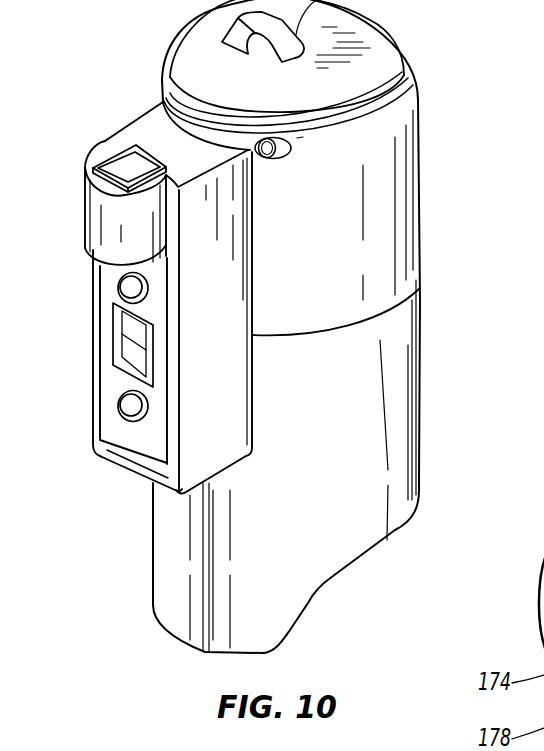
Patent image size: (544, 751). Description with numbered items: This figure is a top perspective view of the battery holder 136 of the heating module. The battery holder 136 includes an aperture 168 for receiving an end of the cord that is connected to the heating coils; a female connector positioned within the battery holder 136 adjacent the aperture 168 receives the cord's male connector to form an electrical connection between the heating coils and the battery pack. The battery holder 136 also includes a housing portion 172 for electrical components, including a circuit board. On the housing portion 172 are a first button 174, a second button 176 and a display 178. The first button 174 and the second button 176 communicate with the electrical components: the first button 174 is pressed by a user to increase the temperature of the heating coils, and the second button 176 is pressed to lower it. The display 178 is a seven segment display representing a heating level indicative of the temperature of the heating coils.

The battery holder 136 is at (280, 326).
The aperture 168 is at (130, 168).
The housing portion 172 is at (395, 342).
The first button 174 is at (118, 288).
The second button 176 is at (118, 407).
The display 178 is at (113, 340).